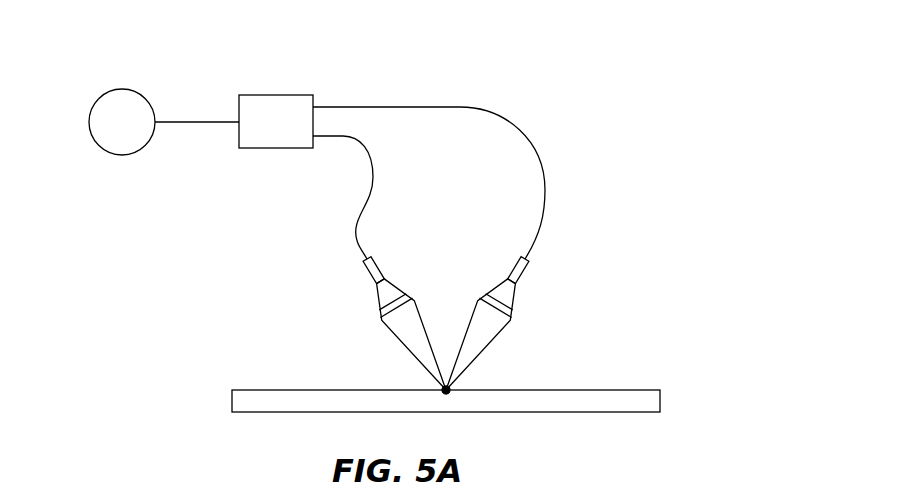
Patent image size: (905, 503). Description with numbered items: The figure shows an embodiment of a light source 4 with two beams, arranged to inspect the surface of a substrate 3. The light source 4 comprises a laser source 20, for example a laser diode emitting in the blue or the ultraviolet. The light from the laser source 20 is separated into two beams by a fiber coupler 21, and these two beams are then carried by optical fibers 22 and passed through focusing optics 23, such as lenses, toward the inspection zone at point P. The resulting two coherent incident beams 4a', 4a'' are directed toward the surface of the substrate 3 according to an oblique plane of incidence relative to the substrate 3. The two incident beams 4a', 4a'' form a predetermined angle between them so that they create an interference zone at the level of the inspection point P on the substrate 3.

The laser source 20 is at (104, 94).
The fiber coupler 21 is at (270, 94).
The optical fibers 22 is at (545, 180).
The light source 4 is at (557, 108).
The focusing optics 23 is at (383, 322).
The incident beam 4a' is at (390, 334).
The incident beam 4a'' is at (506, 334).
The substrate 3 is at (660, 400).